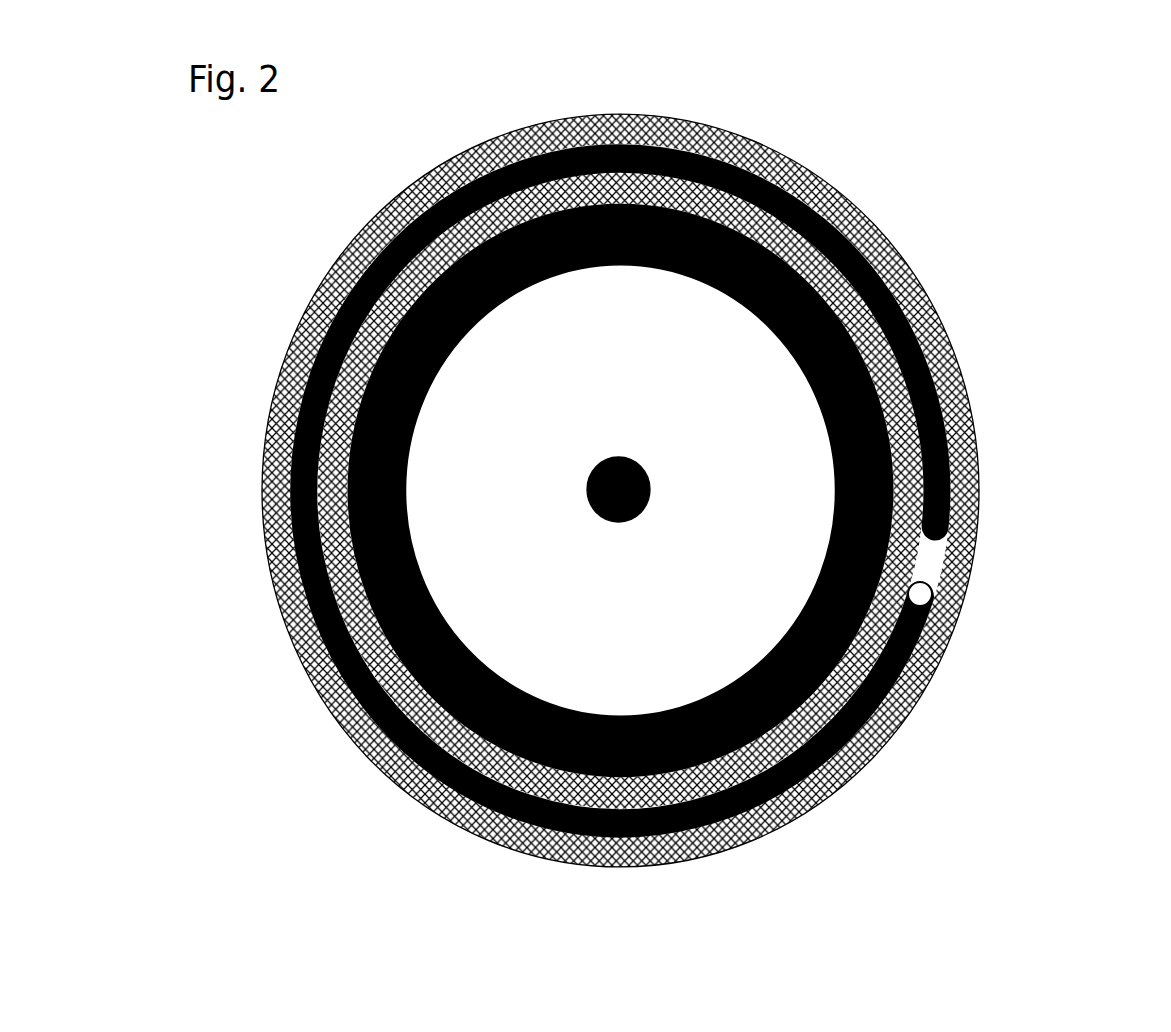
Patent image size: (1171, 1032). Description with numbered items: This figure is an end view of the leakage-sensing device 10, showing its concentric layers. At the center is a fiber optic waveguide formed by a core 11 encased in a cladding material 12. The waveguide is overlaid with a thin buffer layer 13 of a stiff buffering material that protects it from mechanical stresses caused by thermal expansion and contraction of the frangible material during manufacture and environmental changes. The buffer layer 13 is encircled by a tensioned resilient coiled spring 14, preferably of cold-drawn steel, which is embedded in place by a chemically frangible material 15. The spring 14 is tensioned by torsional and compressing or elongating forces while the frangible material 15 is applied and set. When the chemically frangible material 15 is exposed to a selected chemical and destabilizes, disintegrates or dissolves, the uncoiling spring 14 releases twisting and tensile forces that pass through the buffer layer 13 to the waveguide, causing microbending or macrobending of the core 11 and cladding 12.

The leakage-sensing device 10 is at (872, 133).
The core 11 is at (618, 522).
The cladding material 12 is at (737, 622).
The buffer layer 13 is at (858, 621).
The resilient coiled spring 14 is at (905, 314).
The chemically frangible material 15 is at (955, 567).